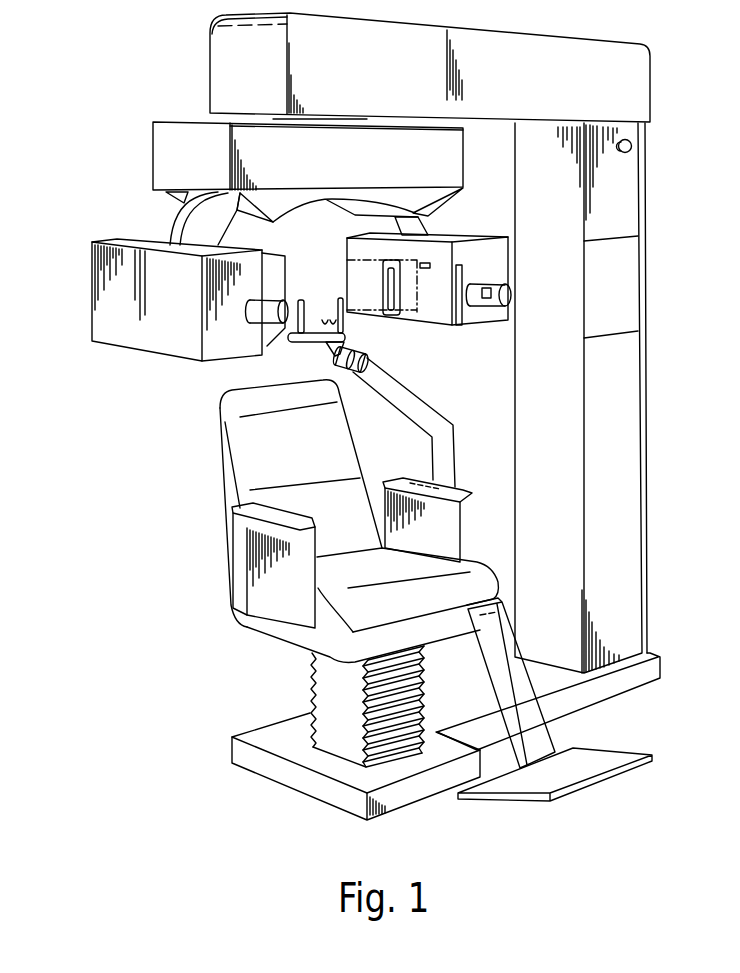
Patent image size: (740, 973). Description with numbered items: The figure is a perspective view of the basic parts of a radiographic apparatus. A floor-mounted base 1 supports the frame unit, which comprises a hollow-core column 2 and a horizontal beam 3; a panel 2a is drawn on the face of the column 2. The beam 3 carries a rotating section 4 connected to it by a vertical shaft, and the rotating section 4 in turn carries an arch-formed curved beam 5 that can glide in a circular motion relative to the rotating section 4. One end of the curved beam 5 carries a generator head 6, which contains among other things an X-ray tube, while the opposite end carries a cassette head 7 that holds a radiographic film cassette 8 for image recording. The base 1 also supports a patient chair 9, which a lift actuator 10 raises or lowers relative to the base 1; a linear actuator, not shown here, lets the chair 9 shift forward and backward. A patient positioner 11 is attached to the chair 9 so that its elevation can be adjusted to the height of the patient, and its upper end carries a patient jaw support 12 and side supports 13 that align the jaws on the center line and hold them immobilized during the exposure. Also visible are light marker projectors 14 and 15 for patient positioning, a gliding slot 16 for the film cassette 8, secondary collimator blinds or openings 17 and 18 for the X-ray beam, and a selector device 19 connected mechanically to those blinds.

The base 1 is at (238, 755).
The hollow-core column 2 is at (627, 573).
The column panel 2a is at (627, 310).
The horizontal beam 3 is at (222, 38).
The rotating section 4 is at (167, 128).
The curved beam 5 is at (183, 225).
The generator head 6 is at (163, 348).
The cassette head 7 is at (503, 320).
The radiographic film cassette 8 is at (340, 268).
The patient chair 9 is at (237, 604).
The lift actuator 10 is at (312, 675).
The patient positioner 11 is at (457, 437).
The patient jaw support 12 is at (322, 330).
The side supports 13 is at (299, 300).
The light marker projector 14 is at (258, 313).
The light marker projector 15 is at (487, 282).
The gliding slot 16 is at (460, 322).
The secondary collimator blind 17 is at (400, 312).
The secondary collimator blind 18 is at (403, 308).
The selector device 19 is at (428, 264).